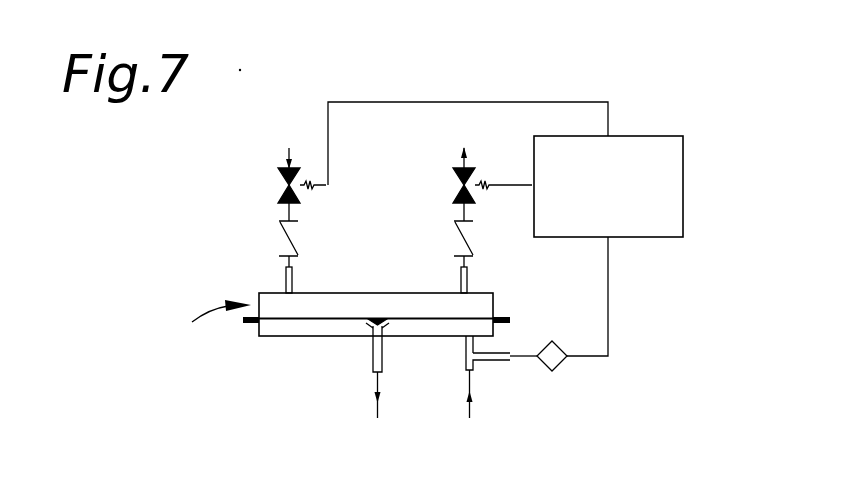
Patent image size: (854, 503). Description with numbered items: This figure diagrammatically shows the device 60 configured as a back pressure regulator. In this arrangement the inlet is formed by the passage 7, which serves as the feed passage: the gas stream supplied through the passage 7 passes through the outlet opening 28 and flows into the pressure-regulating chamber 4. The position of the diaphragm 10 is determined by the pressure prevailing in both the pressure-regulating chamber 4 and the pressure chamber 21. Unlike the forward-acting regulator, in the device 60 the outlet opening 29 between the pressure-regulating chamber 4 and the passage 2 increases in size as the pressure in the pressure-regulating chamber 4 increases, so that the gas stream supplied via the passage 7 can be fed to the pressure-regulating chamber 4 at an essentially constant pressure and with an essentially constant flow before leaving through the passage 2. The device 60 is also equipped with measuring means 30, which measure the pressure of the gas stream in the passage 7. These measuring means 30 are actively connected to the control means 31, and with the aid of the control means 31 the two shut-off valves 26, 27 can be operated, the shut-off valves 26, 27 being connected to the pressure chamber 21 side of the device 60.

The passage 2 is at (367, 362).
The pressure-regulating chamber 4 is at (390, 330).
The passage 7 is at (473, 368).
The diaphragm 10 is at (285, 323).
The pressure chamber 21 is at (350, 307).
The shut-off valve 26 is at (283, 187).
The shut-off valve 27 is at (457, 185).
The outlet opening 28 is at (488, 322).
The outlet opening 29 is at (357, 332).
The measuring means 30 is at (557, 368).
The control means 31 is at (645, 172).
The device 60 is at (204, 317).